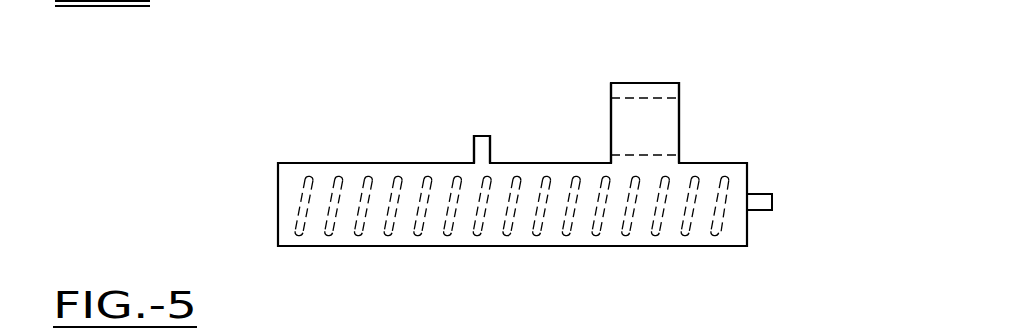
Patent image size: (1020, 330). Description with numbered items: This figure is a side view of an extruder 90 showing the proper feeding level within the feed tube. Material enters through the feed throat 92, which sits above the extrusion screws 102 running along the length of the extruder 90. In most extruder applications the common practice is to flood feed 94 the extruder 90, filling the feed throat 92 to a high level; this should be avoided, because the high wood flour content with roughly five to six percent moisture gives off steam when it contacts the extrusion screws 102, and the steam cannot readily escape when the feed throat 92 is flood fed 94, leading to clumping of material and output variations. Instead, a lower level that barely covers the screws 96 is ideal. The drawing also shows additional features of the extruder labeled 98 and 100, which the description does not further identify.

The extruder 90 is at (747, 163).
The feed throat 92 is at (637, 83).
The flood feed level 94 is at (645, 98).
The ideal feed level 96 is at (648, 155).
The bottom wall 98 is at (393, 247).
The locating tab 100 is at (480, 136).
The extrusion screws 102 is at (683, 235).